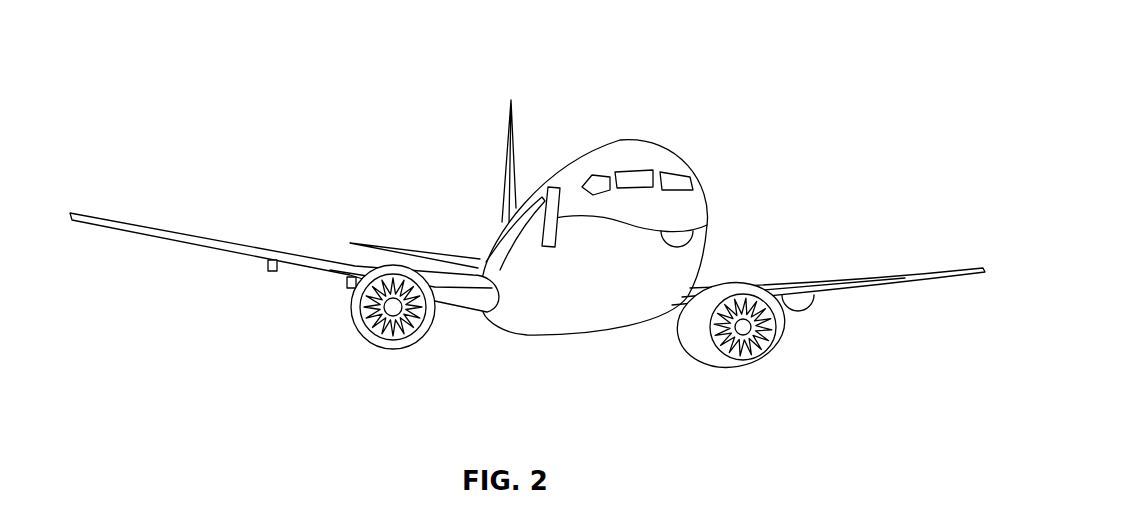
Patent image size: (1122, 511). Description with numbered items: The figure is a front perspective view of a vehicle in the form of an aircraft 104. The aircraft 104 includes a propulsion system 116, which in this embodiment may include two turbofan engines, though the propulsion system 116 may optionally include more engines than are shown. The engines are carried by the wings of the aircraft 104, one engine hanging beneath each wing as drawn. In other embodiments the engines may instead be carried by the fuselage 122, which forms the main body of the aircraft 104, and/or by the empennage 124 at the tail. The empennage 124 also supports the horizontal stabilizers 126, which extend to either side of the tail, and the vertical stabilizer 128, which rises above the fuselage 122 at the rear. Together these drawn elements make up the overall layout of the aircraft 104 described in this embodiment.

The aircraft 104 is at (299, 49).
The propulsion system 116 is at (826, 358).
The fuselage 122 is at (706, 204).
The empennage 124 is at (503, 224).
The horizontal stabilizers 126 is at (384, 242).
The vertical stabilizer 128 is at (508, 137).